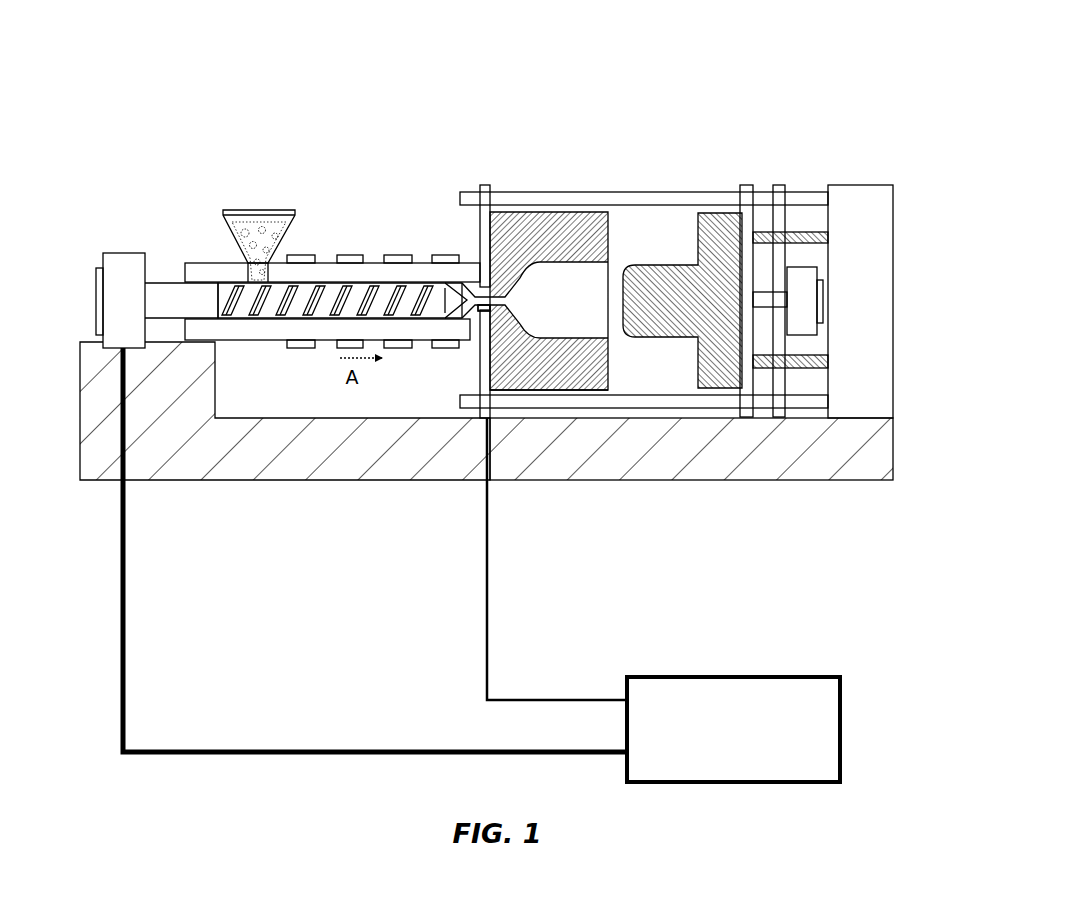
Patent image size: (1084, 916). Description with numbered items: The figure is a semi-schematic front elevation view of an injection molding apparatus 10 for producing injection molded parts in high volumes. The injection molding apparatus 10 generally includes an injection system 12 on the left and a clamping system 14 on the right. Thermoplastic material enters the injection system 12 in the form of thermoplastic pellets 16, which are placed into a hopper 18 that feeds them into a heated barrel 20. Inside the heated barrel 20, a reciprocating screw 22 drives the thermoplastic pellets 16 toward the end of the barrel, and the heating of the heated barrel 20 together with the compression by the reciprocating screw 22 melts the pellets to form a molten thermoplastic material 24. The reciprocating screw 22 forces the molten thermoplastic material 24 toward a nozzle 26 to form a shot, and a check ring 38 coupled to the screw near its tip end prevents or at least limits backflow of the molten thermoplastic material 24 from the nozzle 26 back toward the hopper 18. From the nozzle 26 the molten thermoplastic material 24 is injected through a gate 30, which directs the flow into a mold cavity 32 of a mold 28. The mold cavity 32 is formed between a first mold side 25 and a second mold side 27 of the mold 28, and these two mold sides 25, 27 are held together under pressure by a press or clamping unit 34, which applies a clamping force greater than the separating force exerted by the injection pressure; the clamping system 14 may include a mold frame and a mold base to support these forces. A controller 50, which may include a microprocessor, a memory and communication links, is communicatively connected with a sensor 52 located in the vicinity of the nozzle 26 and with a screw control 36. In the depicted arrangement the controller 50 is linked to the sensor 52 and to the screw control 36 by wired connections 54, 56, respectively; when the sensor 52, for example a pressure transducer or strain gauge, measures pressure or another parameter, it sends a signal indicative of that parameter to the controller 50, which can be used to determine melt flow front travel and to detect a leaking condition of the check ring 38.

The injection molding apparatus 10 is at (451, 60).
The injection system 12 is at (308, 380).
The clamping system 14 is at (636, 484).
The thermoplastic pellets 16 is at (228, 237).
The hopper 18 is at (270, 210).
The heated barrel 20 is at (374, 256).
The reciprocating screw 22 is at (266, 320).
The molten thermoplastic material 24 is at (423, 280).
The first mold side 25 is at (549, 392).
The nozzle 26 is at (503, 212).
The second mold side 27 is at (682, 325).
The mold 28 is at (613, 204).
The gate 30 is at (572, 272).
The mold cavity 32 is at (578, 212).
The clamping unit 34 is at (832, 183).
The screw control 36 is at (115, 252).
The check ring 38 is at (445, 282).
The controller 50 is at (800, 676).
The sensor 52 is at (478, 316).
The wired connection 54 is at (558, 699).
The wired connection 56 is at (365, 750).